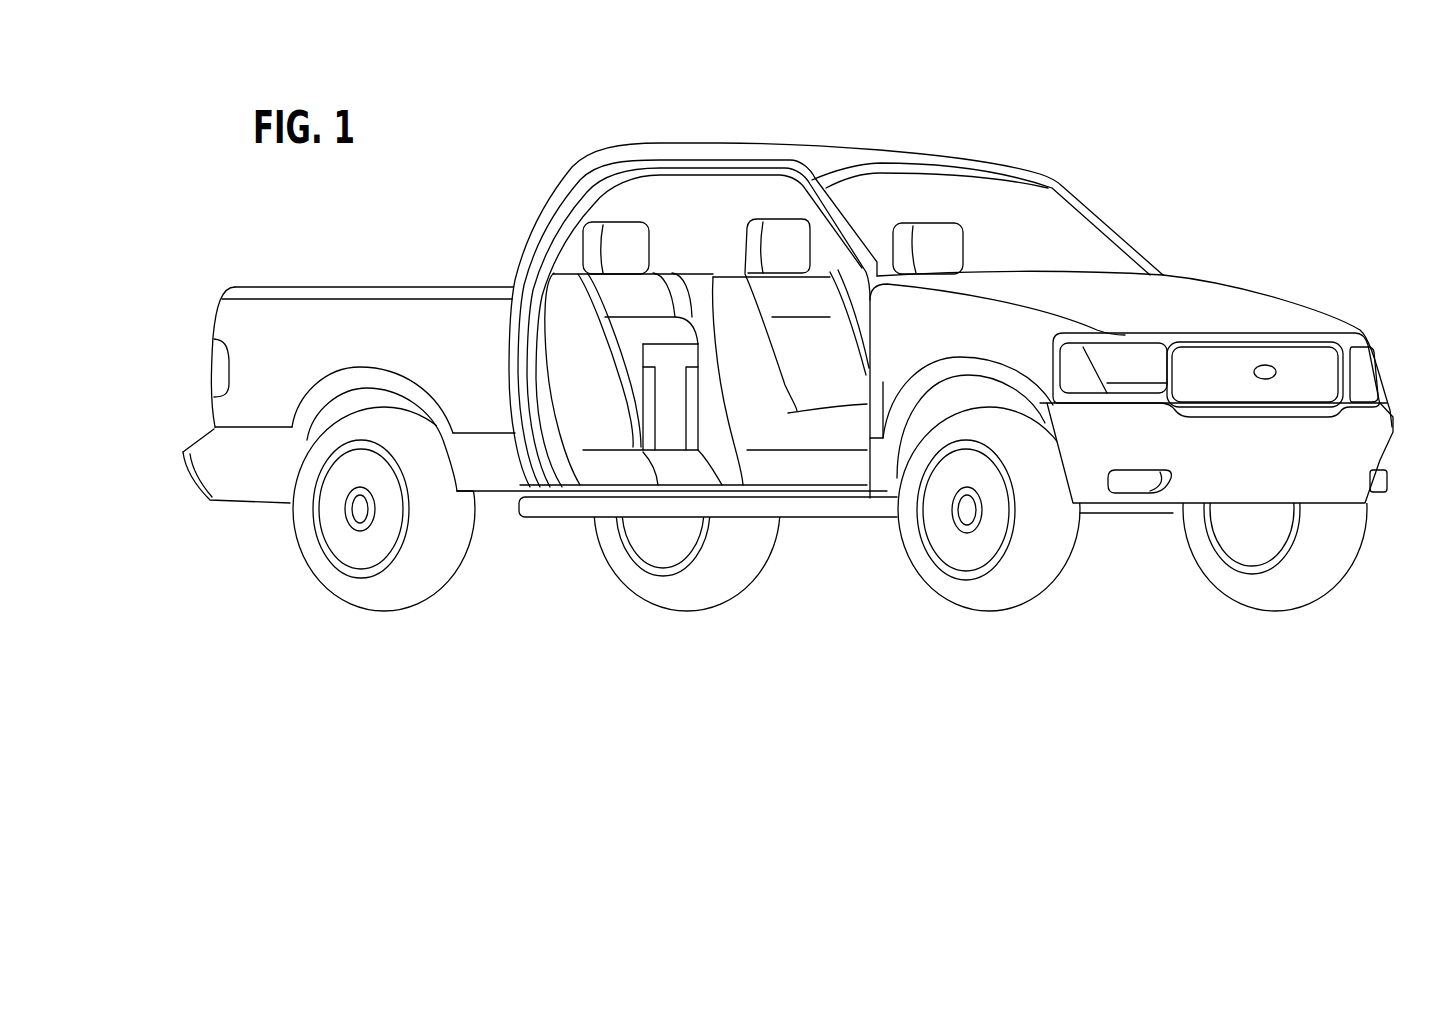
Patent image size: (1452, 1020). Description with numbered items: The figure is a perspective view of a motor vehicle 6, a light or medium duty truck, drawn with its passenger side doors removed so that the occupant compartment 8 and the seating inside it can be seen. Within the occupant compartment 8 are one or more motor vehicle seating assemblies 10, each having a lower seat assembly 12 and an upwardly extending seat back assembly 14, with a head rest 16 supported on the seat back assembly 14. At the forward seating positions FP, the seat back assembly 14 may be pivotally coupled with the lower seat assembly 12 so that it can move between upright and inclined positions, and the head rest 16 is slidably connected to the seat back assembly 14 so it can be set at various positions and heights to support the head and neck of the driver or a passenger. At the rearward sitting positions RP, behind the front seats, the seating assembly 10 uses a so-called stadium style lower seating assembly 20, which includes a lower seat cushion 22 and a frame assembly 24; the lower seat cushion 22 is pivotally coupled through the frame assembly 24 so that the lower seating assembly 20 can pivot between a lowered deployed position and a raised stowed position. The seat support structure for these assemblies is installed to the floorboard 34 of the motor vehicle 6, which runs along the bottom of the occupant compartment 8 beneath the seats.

The motor vehicle 6 is at (1183, 255).
The occupant compartment 8 is at (866, 329).
The motor vehicle seating assembly 10 is at (735, 277).
The lower seat assembly 12 is at (853, 430).
The seat back assembly 14 is at (583, 368).
The head rest 16 is at (616, 240).
The stadium style lower seating assembly 20 is at (627, 323).
The lower seat cushion 22 is at (632, 352).
The frame assembly 24 is at (657, 377).
The floorboard 34 is at (705, 480).
The rearward sitting position RP is at (543, 540).
The forward seating position FP is at (800, 525).